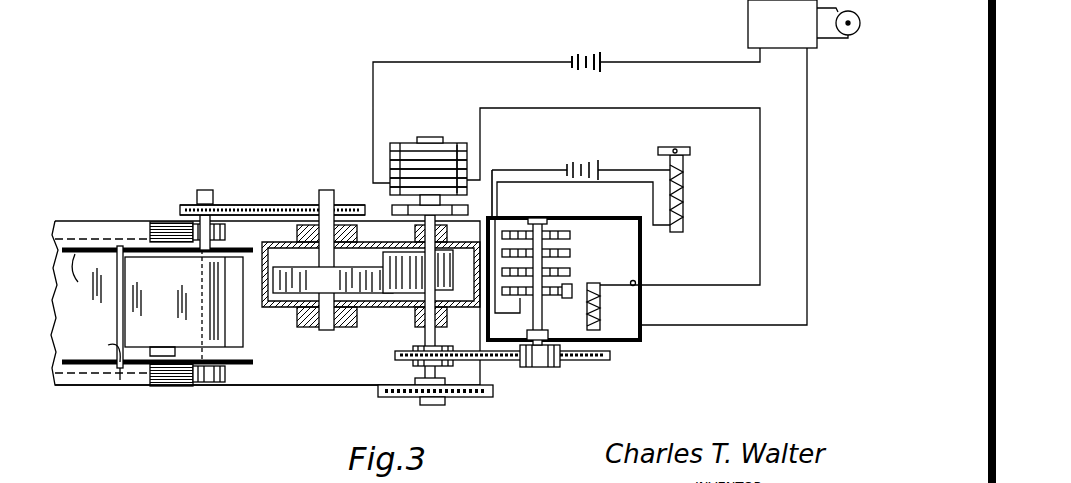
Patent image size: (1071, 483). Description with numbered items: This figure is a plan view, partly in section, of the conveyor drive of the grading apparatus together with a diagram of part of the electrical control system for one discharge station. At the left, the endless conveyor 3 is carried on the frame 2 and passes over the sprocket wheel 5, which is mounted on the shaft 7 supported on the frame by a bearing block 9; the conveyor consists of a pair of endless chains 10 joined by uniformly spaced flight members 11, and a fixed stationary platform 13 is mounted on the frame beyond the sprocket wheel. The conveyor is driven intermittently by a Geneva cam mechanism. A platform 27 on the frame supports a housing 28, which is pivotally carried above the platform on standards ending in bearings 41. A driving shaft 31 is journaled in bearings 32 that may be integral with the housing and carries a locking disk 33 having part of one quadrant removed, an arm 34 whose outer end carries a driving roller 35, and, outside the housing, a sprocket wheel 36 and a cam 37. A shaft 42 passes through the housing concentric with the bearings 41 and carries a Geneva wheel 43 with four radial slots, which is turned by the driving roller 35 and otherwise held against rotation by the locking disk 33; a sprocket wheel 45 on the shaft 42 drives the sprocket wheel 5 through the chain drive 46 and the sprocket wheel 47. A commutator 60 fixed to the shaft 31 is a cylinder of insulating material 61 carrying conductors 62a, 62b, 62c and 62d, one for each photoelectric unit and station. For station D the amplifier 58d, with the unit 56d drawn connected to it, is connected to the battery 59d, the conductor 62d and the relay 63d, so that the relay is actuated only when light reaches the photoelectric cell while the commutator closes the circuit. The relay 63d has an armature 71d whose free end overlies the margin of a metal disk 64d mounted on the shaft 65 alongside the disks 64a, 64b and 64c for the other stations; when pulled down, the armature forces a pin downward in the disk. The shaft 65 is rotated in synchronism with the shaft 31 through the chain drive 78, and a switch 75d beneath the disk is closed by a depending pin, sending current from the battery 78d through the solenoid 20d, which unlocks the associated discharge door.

The frame 2 is at (80, 223).
The endless conveyor 3 is at (72, 275).
The sprocket wheel 5 is at (170, 340).
The shaft 7 is at (200, 280).
The bearing block 9 is at (222, 382).
The endless chains 10 is at (102, 248).
The flight members 11 is at (117, 316).
The stationary platform 13 is at (119, 380).
The solenoid 20d is at (690, 210).
The platform 27 is at (285, 385).
The housing 28 is at (270, 307).
The shaft 31 is at (435, 405).
The bearings 32 is at (415, 232).
The locking disk 33 is at (458, 292).
The arm 34 is at (462, 258).
The driving roller 35 is at (390, 274).
The sprocket wheel 36 is at (480, 397).
The cam 37 is at (392, 210).
The bearings 41 is at (297, 232).
The shaft 42 is at (326, 330).
The Geneva wheel 43 is at (287, 279).
The sprocket wheel 45 is at (292, 205).
The chain drive 46 is at (240, 205).
The sprocket wheel 47 is at (190, 203).
The lamp 56d is at (858, 30).
The amplifier 58d is at (748, 28).
The battery 59d is at (600, 54).
The commutator 60 is at (437, 140).
The cylinder of insulating material 61 is at (455, 155).
The conductor 62a is at (392, 172).
The conductor 62b is at (390, 180).
The conductor 62c is at (388, 187).
The conductor 62d is at (392, 193).
The relay 63d is at (600, 310).
The relay contact 64a is at (560, 235).
The relay contact 64b is at (560, 253).
The relay contact 64c is at (560, 272).
The disk 64d is at (556, 291).
The shaft 65 is at (545, 367).
The armature 71d is at (636, 282).
The switch 75d is at (518, 312).
The chain drive 78 is at (605, 360).
The battery 78d is at (588, 162).